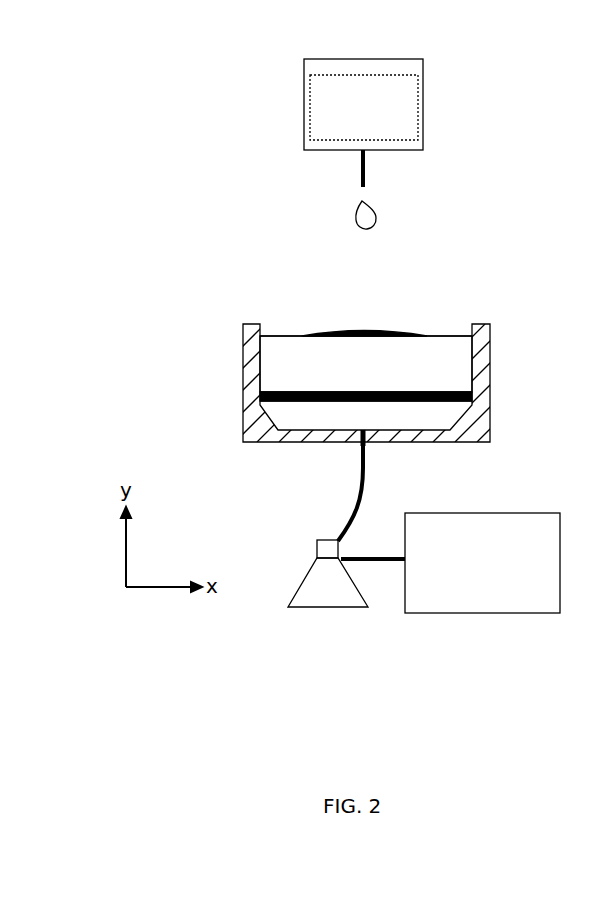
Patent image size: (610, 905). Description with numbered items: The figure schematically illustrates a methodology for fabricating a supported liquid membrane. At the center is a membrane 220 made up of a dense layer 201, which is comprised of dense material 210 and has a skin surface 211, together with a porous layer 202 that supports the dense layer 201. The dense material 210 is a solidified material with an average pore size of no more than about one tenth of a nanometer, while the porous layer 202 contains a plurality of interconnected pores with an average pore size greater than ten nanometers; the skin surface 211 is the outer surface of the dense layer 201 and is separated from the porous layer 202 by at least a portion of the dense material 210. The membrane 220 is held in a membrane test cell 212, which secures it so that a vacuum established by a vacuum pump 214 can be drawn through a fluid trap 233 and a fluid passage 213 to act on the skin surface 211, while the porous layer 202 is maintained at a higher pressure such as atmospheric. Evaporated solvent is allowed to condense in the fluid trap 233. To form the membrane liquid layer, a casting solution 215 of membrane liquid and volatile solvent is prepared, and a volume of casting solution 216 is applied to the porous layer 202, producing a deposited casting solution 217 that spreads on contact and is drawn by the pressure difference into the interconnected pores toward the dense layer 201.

The casting solution 215 is at (390, 117).
The volume of casting solution 216 is at (373, 217).
The membrane 220 is at (276, 318).
The deposited casting solution 217 is at (395, 332).
The porous layer 202 is at (453, 362).
The membrane test cell 212 is at (242, 368).
The dense layer 201 is at (282, 402).
The dense material 210 is at (305, 402).
The skin surface 211 is at (339, 402).
The fluid passage 213 is at (360, 508).
The vacuum pump 214 is at (482, 563).
The fluid trap 233 is at (328, 573).